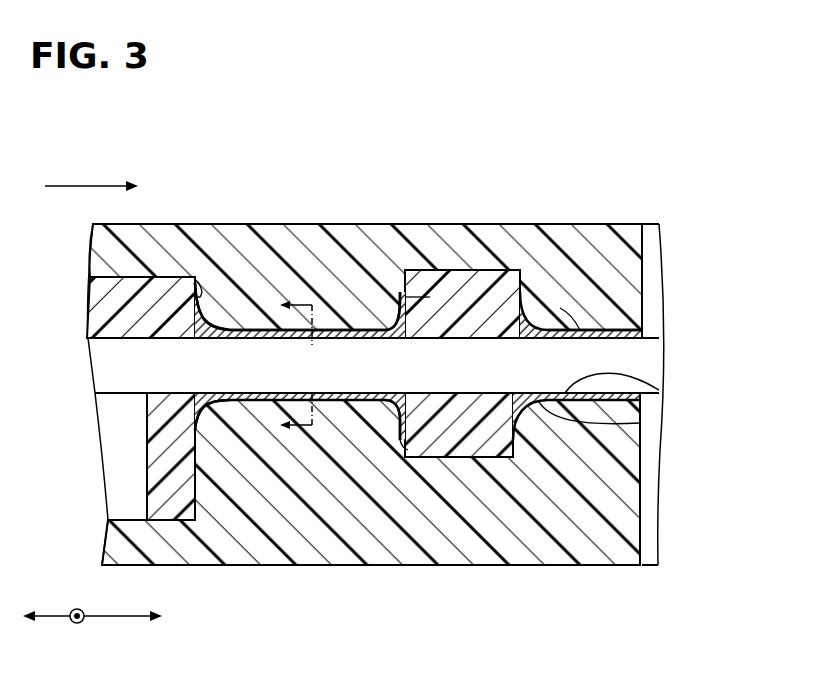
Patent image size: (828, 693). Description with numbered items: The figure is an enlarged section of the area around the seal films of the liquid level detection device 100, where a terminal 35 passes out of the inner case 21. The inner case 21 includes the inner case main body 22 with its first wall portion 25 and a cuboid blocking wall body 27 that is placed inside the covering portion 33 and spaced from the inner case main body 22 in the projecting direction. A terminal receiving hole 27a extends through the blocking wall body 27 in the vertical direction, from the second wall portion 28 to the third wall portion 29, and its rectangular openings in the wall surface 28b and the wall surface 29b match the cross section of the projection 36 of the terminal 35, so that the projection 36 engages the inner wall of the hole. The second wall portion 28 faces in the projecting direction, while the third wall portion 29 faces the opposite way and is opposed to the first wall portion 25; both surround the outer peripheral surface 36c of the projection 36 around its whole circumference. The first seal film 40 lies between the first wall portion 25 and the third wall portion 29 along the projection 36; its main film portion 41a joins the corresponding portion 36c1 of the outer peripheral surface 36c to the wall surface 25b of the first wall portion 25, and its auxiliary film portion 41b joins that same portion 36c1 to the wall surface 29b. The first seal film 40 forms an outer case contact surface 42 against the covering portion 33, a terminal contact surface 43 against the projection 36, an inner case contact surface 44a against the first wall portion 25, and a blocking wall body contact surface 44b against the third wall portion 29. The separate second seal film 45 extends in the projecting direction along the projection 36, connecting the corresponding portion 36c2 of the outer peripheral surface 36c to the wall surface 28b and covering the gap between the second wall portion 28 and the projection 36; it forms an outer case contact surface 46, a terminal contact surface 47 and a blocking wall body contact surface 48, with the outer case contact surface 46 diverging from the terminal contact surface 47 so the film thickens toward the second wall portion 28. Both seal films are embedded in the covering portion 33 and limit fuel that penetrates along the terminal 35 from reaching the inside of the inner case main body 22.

The liquid level detection device 100 is at (657, 172).
The inner case 21 is at (305, 118).
The inner case main body 22 is at (163, 285).
The blocking wall body 27 is at (437, 270).
The terminal receiving hole 27a is at (466, 432).
The first wall portion 25 is at (147, 466).
The wall surface of first wall portion 25b is at (147, 420).
The second wall portion 28 is at (530, 312).
The wall surface of second wall portion 28b is at (562, 310).
The third wall portion 29 is at (393, 322).
The wall surface of third wall portion 29b is at (403, 296).
The covering portion 33 is at (566, 565).
The terminal 35 is at (648, 405).
The projection 36 is at (347, 252).
The outer peripheral surface of projection 36c is at (284, 328).
The corresponding portion of outer peripheral surface 36c1 is at (228, 322).
The corresponding portion of outer peripheral surface 36c2 is at (566, 333).
The first seal film 40 is at (411, 452).
The main film portion 41a is at (220, 418).
The auxiliary film portion 41b is at (398, 428).
The outer case contact surface 42 is at (200, 440).
The terminal contact surface 43 is at (345, 404).
The inner case contact surface 44a is at (198, 290).
The blocking wall body contact surface 44b is at (430, 297).
The second seal film 45 is at (516, 402).
The outer case contact surface 46 is at (600, 423).
The terminal contact surface 47 is at (598, 380).
The blocking wall body contact surface 48 is at (509, 270).